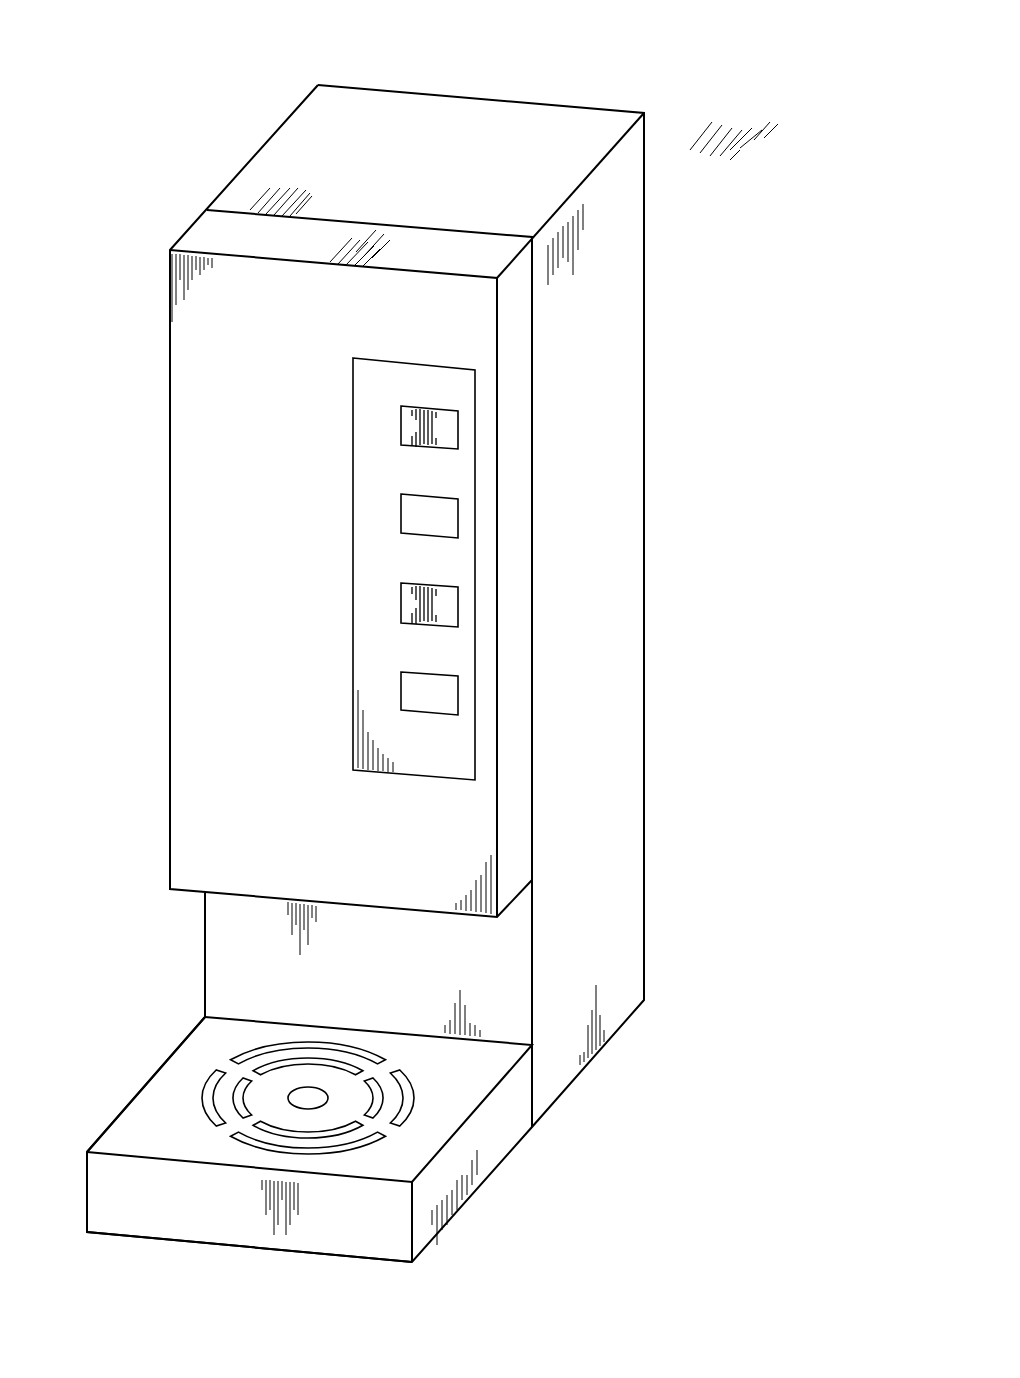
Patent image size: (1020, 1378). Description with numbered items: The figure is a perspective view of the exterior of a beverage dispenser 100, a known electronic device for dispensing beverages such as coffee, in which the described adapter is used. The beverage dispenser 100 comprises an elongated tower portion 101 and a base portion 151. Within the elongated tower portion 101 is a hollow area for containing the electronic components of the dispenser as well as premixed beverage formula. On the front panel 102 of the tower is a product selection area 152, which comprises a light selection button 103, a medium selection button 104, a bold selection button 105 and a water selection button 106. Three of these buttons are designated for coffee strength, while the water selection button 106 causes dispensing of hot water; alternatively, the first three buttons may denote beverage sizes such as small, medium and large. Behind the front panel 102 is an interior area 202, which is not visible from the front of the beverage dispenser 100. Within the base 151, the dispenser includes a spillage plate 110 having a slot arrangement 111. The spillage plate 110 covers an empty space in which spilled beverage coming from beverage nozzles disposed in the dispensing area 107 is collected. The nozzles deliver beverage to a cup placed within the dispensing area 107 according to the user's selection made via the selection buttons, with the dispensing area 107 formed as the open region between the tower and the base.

The beverage dispenser 100 is at (743, 58).
The elongated tower portion 101 is at (647, 513).
The front panel 102 is at (283, 595).
The interior area 202 is at (182, 425).
The product selection area 152 is at (415, 362).
The light selection button 103 is at (445, 430).
The medium selection button 104 is at (445, 519).
The bold selection button 105 is at (445, 607).
The water selection button 106 is at (445, 695).
The dispensing area 107 is at (215, 962).
The spillage plate 110 is at (118, 1135).
The slot arrangement 111 is at (408, 1090).
The base portion 151 is at (140, 1237).